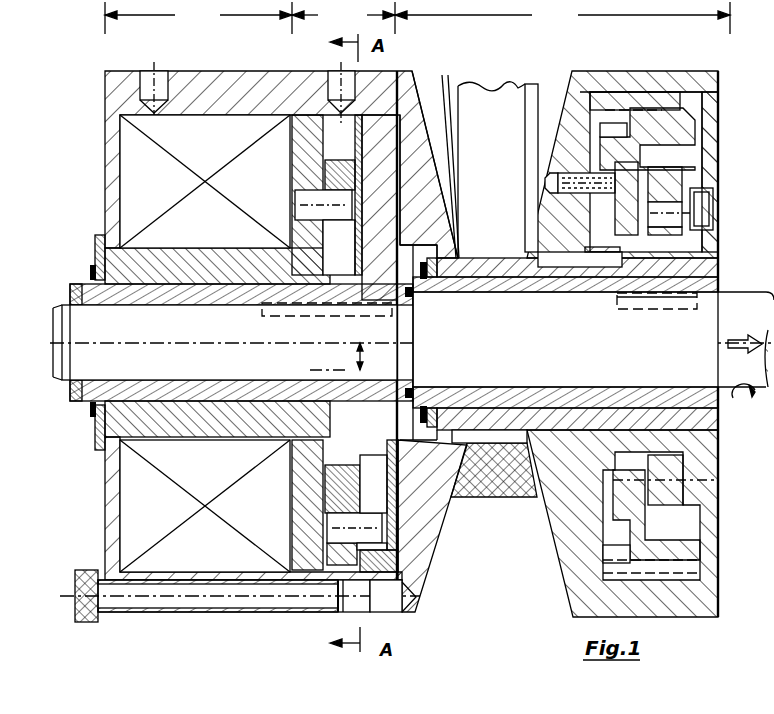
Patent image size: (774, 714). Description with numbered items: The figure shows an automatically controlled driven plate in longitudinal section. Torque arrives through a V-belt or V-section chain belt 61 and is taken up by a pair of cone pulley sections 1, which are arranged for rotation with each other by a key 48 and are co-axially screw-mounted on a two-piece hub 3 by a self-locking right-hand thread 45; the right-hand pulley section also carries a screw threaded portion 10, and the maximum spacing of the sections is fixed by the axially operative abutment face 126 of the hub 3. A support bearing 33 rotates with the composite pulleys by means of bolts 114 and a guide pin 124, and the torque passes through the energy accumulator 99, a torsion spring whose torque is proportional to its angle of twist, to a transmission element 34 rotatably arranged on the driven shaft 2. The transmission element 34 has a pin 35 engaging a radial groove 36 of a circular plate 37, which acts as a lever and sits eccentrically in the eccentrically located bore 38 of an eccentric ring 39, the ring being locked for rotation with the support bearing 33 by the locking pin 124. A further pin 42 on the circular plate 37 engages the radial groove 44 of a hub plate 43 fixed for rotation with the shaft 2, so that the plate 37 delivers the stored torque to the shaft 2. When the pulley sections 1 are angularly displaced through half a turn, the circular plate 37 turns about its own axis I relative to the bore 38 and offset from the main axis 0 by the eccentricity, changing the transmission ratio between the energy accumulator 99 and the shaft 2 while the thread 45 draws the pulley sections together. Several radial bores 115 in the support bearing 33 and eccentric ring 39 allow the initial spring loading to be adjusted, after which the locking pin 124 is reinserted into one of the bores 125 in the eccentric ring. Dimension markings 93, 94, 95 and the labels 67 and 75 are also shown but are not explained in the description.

The cone pulley sections 1 is at (583, 605).
The driven shaft 2 is at (743, 300).
The hub 3 is at (705, 172).
The screw threaded portion 10 is at (685, 133).
The support bearing 33 is at (203, 83).
The transmission element 34 is at (335, 168).
The pin 35 is at (383, 192).
The radial groove 36 is at (337, 197).
The circular plate 37 is at (342, 228).
The eccentrically located bore 38 is at (383, 158).
The eccentric ring 39 is at (362, 87).
The pin 42 is at (370, 537).
The hub plate 43 is at (440, 74).
The radial groove 44 is at (373, 492).
The right-hand thread 45 is at (650, 117).
The key 48 is at (548, 262).
The V-belt or V-section chain belt 61 is at (518, 93).
The angle 67 is at (767, 469).
The angle 75 is at (767, 139).
The dimension 93 is at (562, 18).
The dimension 94 is at (198, 18).
The dimension 95 is at (343, 18).
The energy accumulator 99 is at (203, 508).
The bolts 114 is at (390, 590).
The radial bores 115 is at (150, 82).
The locking pin 124 is at (85, 578).
The bores 125 is at (340, 607).
The abutment face 126 is at (683, 435).
The axis 0 is at (405, 342).
The axis of rotation I is at (328, 361).